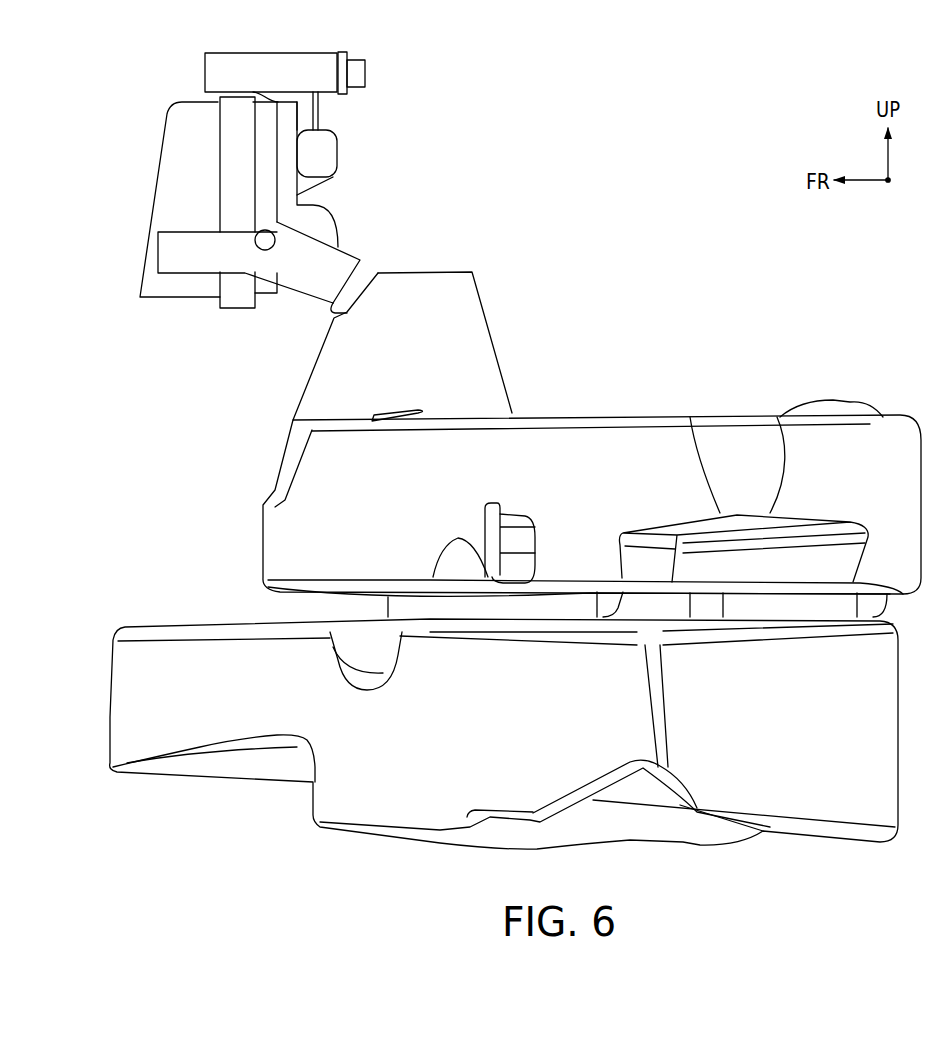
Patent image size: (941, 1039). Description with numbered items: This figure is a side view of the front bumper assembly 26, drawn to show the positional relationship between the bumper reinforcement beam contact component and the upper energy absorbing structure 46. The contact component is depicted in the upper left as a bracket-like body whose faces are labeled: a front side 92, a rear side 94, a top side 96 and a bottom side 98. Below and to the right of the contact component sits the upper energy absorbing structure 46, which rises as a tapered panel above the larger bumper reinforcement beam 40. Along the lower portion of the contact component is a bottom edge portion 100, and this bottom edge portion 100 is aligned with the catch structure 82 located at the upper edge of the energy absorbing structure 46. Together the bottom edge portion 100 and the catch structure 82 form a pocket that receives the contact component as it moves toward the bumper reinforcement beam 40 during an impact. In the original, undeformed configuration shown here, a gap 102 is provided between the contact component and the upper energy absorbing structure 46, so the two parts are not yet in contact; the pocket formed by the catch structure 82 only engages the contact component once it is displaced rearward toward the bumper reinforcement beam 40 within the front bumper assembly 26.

The front bumper assembly 26 is at (660, 256).
The bumper reinforcement beam 40 is at (640, 398).
The upper energy absorbing structure 46 is at (423, 328).
The catch structure 82 is at (372, 292).
The front side 92 is at (377, 136).
The rear side 94 is at (330, 190).
The top side 96 is at (190, 67).
The bottom side 98 is at (210, 313).
The bottom edge portion 100 is at (335, 274).
The gap 102 is at (320, 314).